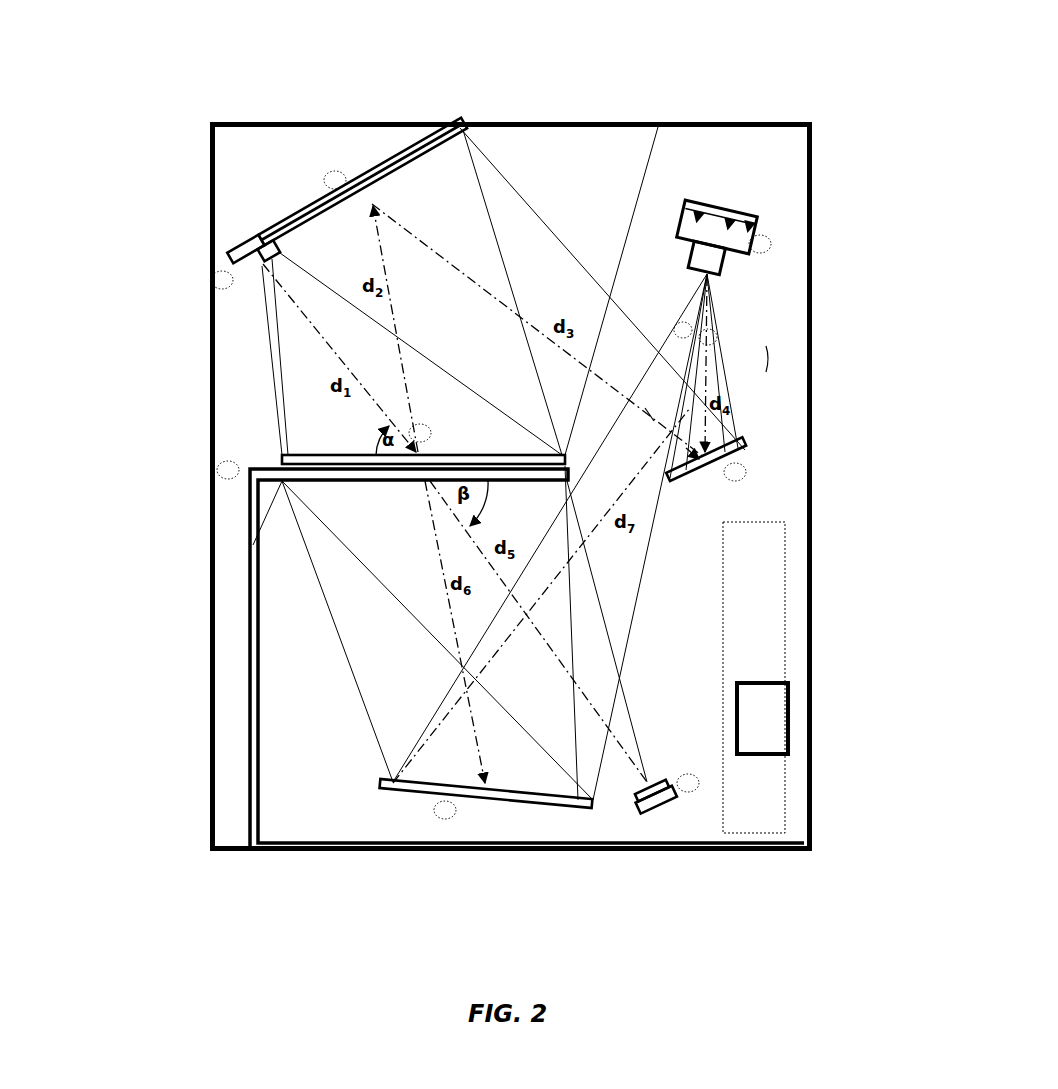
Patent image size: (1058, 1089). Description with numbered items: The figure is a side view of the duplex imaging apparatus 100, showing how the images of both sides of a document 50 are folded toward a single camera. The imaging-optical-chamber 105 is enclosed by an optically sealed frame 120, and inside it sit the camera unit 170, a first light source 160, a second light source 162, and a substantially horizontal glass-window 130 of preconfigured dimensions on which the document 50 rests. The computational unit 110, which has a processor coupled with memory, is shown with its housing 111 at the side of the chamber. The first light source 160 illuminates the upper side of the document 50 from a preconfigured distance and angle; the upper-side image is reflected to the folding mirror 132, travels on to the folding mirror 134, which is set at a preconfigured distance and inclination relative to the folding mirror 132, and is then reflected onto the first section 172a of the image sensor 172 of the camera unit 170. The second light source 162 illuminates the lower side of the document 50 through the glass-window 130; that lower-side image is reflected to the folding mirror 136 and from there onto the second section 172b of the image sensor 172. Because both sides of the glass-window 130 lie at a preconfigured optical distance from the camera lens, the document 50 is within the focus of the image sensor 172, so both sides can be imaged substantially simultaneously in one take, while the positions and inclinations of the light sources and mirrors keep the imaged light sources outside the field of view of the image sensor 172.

The duplex imaging apparatus 100 is at (426, 449).
The optically sealed frame 120 is at (500, 123).
The first light source 160 is at (246, 262).
The folding mirror 132 is at (272, 180).
The glass-window 130 is at (378, 484).
The folding mirror 134 is at (738, 474).
The folding mirror 136 is at (426, 794).
The camera unit 170 is at (804, 242).
The image sensor 172 is at (762, 244).
The first section of image sensor 172a is at (708, 214).
The second section of image sensor 172b is at (736, 222).
The second light source 162 is at (658, 808).
The imaging-optical-chamber 105 is at (768, 360).
The document 50 is at (252, 466).
The computational unit 110 is at (800, 722).
The housing 111 is at (786, 682).